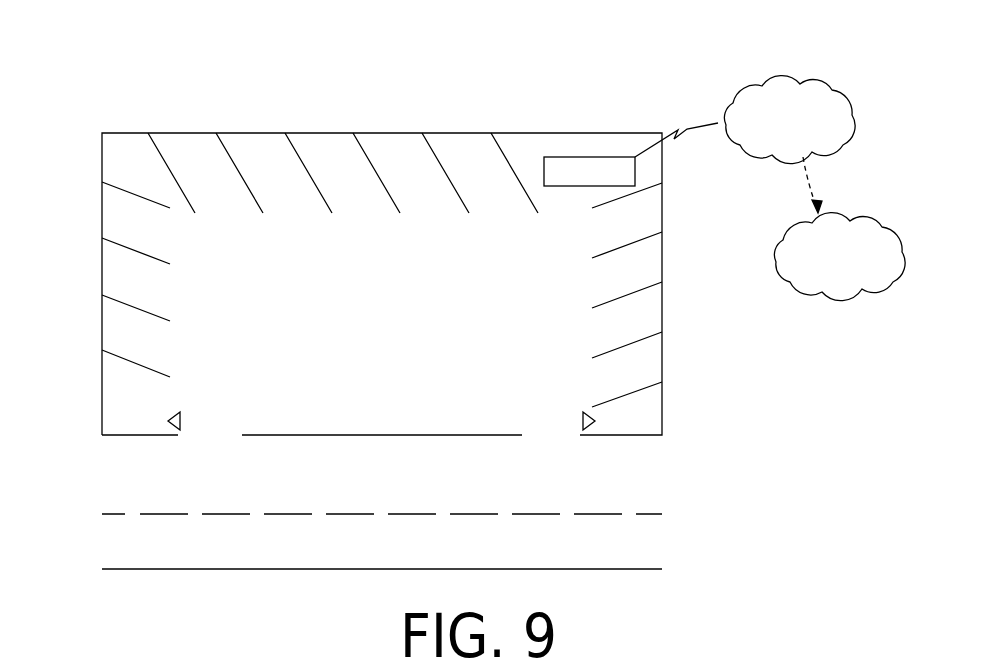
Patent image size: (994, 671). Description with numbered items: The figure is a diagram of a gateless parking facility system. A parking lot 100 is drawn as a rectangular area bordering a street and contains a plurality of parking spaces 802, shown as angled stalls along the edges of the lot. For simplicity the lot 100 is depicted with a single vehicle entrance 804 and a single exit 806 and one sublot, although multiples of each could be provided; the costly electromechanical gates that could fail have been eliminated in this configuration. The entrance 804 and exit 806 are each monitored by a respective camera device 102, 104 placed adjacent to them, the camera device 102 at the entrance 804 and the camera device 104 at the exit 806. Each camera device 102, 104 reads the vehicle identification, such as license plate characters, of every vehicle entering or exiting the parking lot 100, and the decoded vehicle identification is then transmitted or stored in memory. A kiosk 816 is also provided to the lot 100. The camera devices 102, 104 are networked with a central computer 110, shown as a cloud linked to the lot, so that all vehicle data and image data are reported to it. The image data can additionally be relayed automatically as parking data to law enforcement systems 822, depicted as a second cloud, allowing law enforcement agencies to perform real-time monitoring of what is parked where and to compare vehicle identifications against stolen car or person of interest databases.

The parking lot 100 is at (405, 302).
The parking spaces 802 is at (258, 148).
The kiosk 816 is at (592, 157).
The central computer 110 is at (798, 77).
The law enforcement systems 822 is at (850, 300).
The exit camera device 104 is at (102, 412).
The entrance camera device 102 is at (662, 412).
The exit 806 is at (212, 440).
The entrance 804 is at (553, 438).